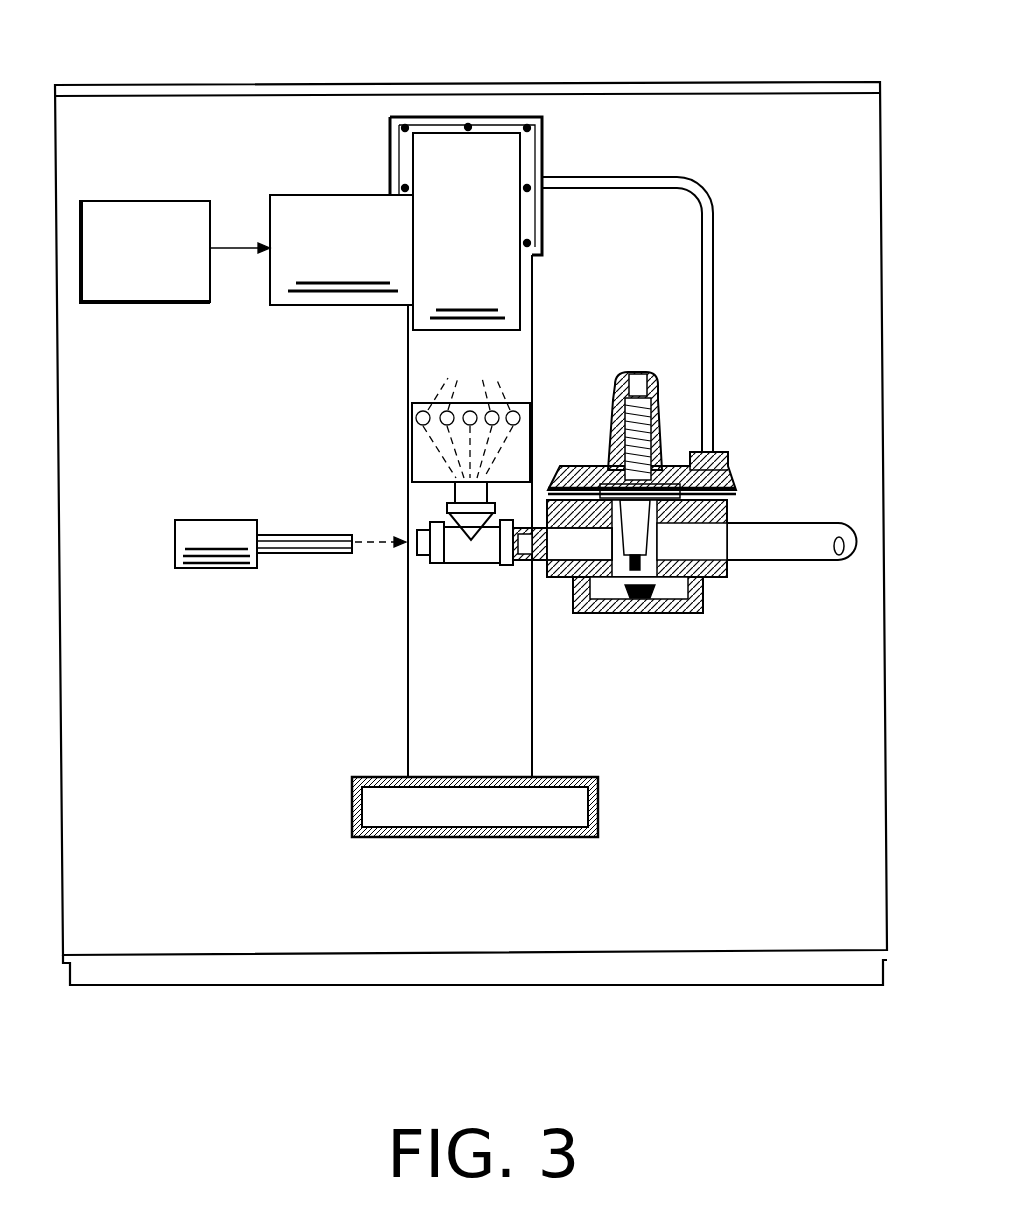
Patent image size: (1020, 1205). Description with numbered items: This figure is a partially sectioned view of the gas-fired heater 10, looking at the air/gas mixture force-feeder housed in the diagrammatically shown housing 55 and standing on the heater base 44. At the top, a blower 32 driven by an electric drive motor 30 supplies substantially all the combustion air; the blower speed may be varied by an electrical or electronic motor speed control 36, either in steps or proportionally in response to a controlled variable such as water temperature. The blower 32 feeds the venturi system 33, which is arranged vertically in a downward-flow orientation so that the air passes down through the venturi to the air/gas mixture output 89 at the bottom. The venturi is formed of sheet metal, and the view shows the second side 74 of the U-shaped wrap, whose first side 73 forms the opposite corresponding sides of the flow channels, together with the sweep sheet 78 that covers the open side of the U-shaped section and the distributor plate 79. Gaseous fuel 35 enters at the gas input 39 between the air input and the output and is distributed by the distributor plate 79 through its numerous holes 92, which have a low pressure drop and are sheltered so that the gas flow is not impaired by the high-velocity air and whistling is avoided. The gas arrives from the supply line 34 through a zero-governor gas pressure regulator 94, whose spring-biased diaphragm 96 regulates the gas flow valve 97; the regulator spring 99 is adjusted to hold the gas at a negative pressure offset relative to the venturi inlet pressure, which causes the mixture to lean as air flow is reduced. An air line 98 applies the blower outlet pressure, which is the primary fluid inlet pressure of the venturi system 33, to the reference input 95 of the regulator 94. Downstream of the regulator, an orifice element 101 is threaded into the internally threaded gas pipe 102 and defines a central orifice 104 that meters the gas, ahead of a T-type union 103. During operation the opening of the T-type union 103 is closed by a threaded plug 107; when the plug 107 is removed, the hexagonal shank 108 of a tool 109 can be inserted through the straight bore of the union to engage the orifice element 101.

The gas-fired heater 10 is at (250, 736).
The electric drive motor 30 is at (312, 270).
The blower 32 is at (440, 270).
The venturi system 33 is at (407, 345).
The supply line 34 is at (805, 522).
The gaseous fuel 35 is at (412, 445).
The motor speed control 36 is at (175, 270).
The gas input 39 is at (450, 500).
The base 44 is at (738, 950).
The housing 55 is at (195, 84).
The first side 73 is at (408, 385).
The second side 74 is at (537, 644).
The sweep sheet 78 is at (442, 691).
The distributor plate 79 is at (430, 470).
The air/gas mixture output 89 is at (444, 830).
The holes 92 is at (468, 410).
The gas pressure regulator 94 is at (713, 580).
The reference input 95 is at (725, 462).
The diaphragm 96 is at (598, 485).
The gas flow valve 97 is at (648, 614).
The air line 98 is at (714, 258).
The regulator spring 99 is at (660, 402).
The orifice element 101 is at (530, 566).
The gas pipe 102 is at (540, 566).
The T-type union 103 is at (432, 575).
The central orifice 104 is at (577, 546).
The threaded plug 107 is at (418, 560).
The hexagonal shank 108 is at (272, 535).
The tool 109 is at (222, 566).